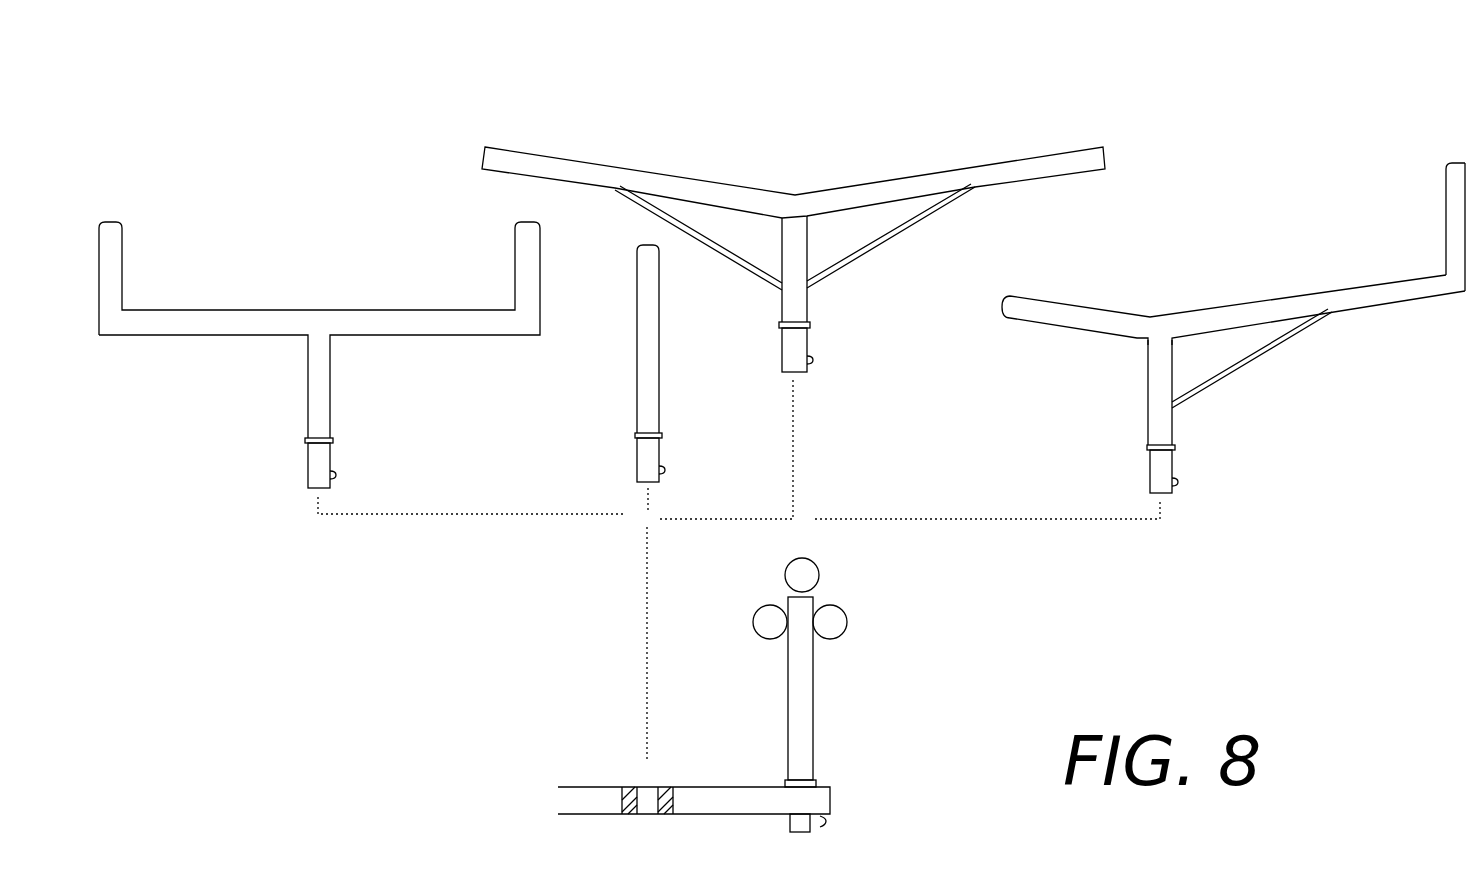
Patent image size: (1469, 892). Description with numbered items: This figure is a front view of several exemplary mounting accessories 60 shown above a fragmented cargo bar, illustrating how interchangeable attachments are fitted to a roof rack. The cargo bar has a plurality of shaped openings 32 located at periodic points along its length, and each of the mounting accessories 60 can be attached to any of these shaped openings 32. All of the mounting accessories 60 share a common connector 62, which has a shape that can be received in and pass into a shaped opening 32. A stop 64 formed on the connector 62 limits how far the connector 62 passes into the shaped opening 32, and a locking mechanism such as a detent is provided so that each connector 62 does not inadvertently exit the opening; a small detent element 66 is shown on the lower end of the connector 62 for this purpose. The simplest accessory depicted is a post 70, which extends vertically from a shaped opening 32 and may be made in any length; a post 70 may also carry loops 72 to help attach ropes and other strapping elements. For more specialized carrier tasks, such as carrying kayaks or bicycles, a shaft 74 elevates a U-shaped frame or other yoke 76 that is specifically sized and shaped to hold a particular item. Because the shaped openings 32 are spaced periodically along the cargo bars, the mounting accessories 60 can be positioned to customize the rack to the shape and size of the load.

The shaped opening 32 is at (648, 797).
The mounting accessories 60 is at (973, 70).
The connector 62 is at (797, 340).
The stop 64 is at (782, 312).
The retaining pin 66 is at (812, 360).
The post 70 is at (636, 382).
The loops 72 is at (847, 620).
The shaft 74 is at (1160, 380).
The yoke 76 is at (1243, 313).